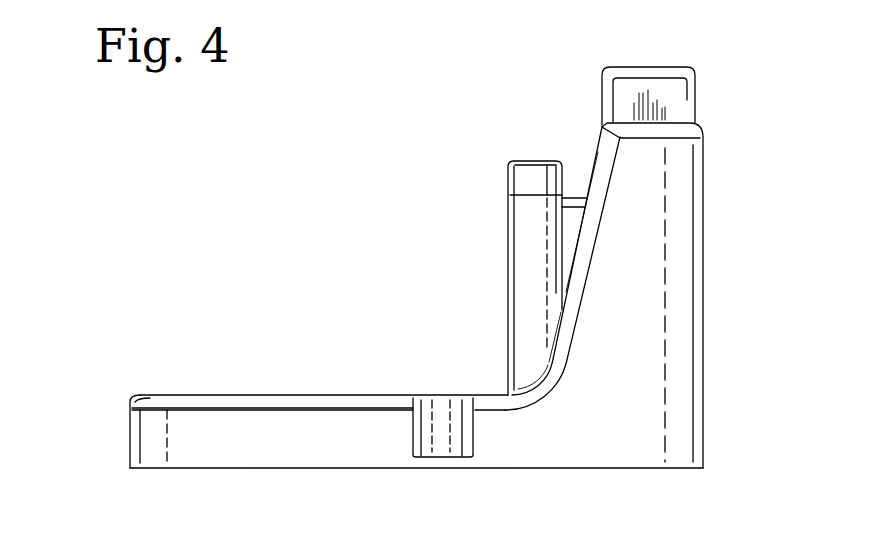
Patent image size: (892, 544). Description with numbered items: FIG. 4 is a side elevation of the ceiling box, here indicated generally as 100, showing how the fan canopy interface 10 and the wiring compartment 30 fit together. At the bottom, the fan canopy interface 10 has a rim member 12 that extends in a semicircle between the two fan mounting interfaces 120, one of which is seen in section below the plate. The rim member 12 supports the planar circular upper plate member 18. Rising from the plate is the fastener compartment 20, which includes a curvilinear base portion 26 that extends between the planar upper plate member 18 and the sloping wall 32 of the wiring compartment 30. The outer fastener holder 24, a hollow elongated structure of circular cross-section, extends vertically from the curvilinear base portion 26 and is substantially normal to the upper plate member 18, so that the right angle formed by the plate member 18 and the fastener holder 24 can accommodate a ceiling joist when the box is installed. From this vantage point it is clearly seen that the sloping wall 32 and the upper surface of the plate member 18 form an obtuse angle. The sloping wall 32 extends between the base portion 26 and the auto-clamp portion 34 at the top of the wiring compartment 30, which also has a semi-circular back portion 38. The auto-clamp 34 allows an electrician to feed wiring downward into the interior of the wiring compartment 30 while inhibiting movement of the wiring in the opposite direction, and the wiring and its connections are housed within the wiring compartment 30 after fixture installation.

The fan canopy interface 10 is at (160, 452).
The rim member 12 is at (132, 446).
The upper plate member 18 is at (182, 393).
The fastener compartment 20 is at (466, 251).
The outer fastener holder 24 is at (508, 218).
The curvilinear base portion 26 is at (528, 397).
The wiring compartment 30 is at (707, 188).
The sloping wall 32 is at (592, 170).
The auto-clamp portion 34 is at (650, 67).
The semi-circular back portion 38 is at (688, 345).
The assembly 100 is at (285, 176).
The fan mounting interface 120 is at (427, 448).